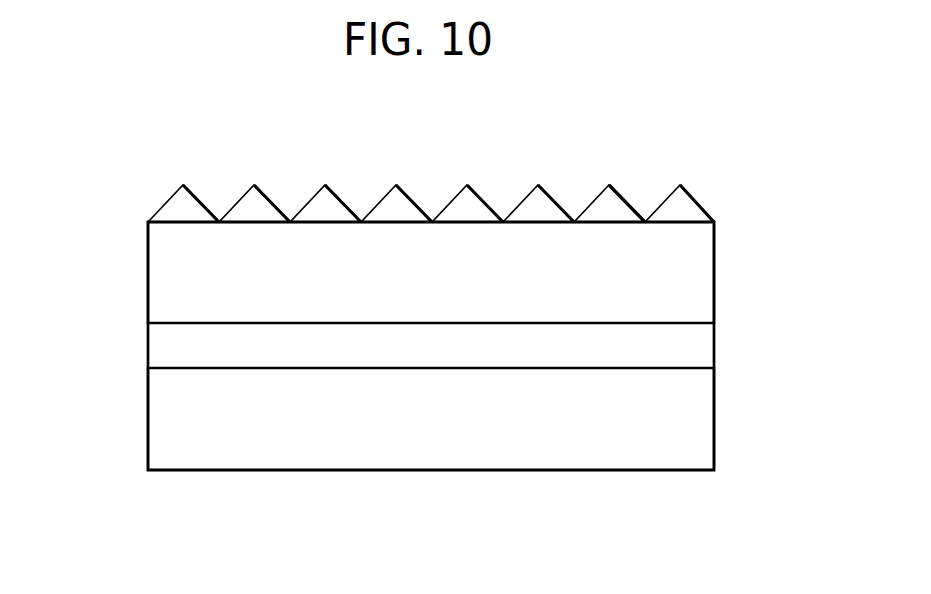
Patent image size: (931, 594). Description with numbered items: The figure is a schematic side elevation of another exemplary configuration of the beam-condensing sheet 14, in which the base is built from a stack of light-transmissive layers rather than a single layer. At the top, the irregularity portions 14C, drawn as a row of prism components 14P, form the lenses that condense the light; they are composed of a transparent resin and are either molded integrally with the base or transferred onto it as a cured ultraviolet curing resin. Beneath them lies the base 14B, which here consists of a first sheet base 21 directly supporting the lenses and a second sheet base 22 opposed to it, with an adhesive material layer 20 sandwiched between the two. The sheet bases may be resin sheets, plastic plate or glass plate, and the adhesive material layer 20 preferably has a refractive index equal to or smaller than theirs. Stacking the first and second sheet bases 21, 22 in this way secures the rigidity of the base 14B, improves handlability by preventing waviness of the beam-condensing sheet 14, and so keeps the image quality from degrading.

The beam-condensing sheet 14 is at (225, 119).
The irregularity portions 14C is at (137, 181).
The prism component 14P is at (611, 187).
The base 14B is at (142, 223).
The first sheet base 21 is at (705, 267).
The adhesive material layer 20 is at (705, 349).
The second sheet base 22 is at (705, 422).